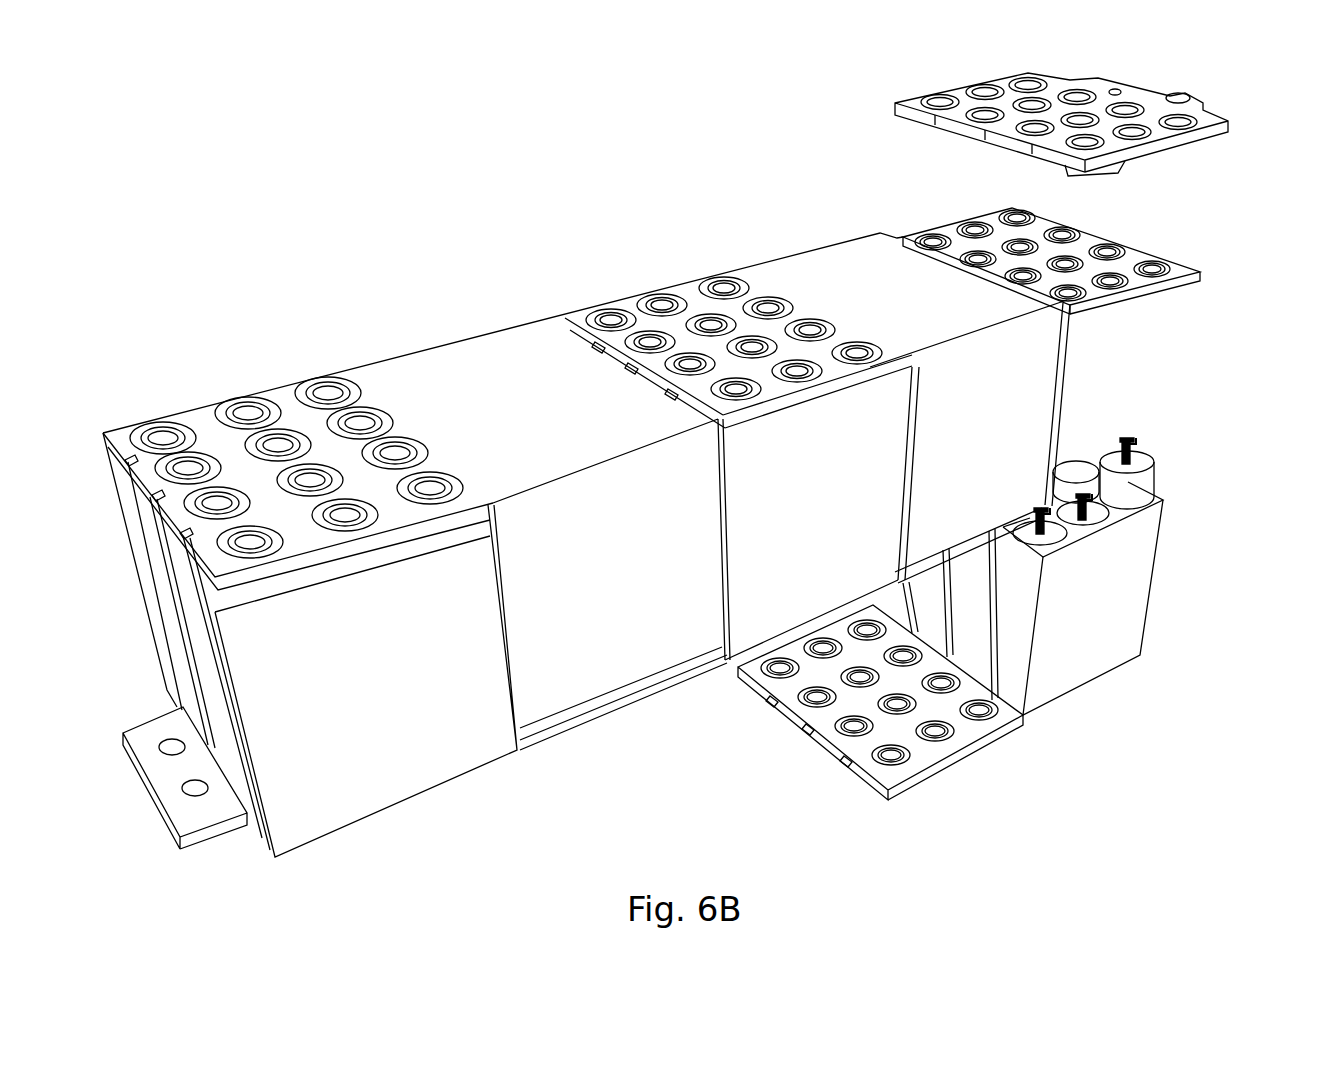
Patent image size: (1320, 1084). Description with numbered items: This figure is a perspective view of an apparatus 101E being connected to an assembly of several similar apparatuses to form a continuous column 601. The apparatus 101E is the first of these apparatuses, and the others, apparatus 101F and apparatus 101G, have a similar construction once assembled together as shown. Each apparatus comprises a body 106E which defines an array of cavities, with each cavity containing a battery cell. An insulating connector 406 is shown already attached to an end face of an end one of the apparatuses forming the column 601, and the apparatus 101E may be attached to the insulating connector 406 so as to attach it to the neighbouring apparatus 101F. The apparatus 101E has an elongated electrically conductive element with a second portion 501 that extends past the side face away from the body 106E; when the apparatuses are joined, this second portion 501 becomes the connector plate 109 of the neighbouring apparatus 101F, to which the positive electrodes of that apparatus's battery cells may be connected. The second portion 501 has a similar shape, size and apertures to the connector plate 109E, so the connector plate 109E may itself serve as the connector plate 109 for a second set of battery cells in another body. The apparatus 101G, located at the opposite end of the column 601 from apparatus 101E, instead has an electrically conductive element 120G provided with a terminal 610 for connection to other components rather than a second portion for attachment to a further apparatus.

The column 601 is at (1214, 616).
The apparatus 101G is at (388, 614).
The apparatus 101F is at (967, 436).
The apparatus 101E is at (1078, 773).
The electrically conductive element 120G is at (340, 828).
The terminal 610 is at (200, 812).
The connector plate 109 is at (887, 775).
The connector plate 109E is at (1158, 143).
The second portion 501 is at (926, 758).
The insulating connector 406 is at (1066, 380).
The body 106E is at (1077, 640).